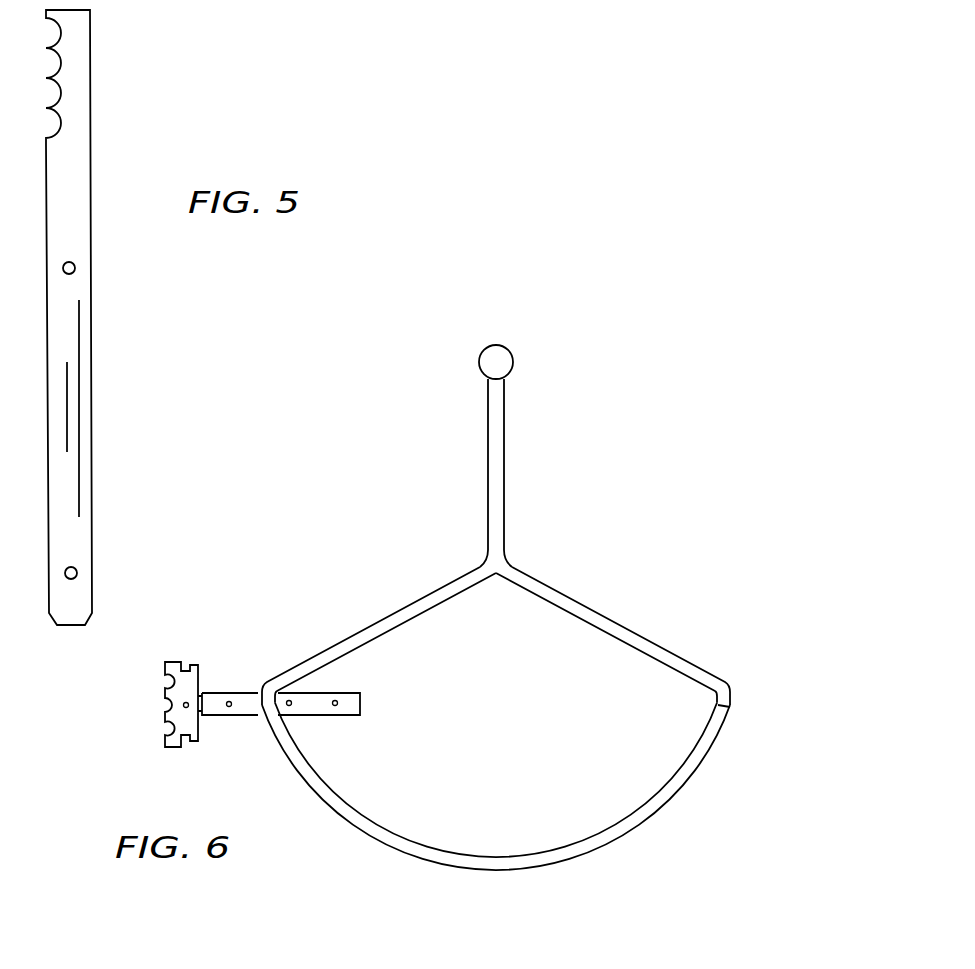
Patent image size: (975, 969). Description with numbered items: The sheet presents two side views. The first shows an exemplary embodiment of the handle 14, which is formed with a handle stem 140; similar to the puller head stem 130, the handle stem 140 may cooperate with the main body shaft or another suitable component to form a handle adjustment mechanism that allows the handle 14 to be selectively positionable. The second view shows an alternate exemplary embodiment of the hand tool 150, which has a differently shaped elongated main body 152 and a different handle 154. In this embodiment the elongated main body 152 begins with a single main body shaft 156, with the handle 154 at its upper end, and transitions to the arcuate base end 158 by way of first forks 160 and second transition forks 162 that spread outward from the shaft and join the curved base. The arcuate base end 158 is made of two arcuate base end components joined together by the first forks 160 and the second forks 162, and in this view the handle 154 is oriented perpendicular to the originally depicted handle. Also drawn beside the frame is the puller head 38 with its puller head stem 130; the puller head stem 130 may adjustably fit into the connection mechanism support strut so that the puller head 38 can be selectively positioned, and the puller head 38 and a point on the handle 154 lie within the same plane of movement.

In FIG. 5, the handle 14 is at (111, 49).
In FIG. 5, the handle stem 140 is at (91, 345).
In FIG. 6, the puller head 38 is at (182, 662).
In FIG. 6, the puller head stem 130 is at (315, 716).
In FIG. 6, the hand tool 150 is at (561, 614).
In FIG. 6, the elongated main body 152 is at (561, 643).
In FIG. 6, the handle 154 is at (505, 350).
In FIG. 6, the main body shaft 156 is at (505, 487).
In FIG. 6, the arcuate base end 158 is at (497, 870).
In FIG. 6, the first forks 160 is at (621, 619).
In FIG. 6, the second transition forks 162 is at (372, 622).